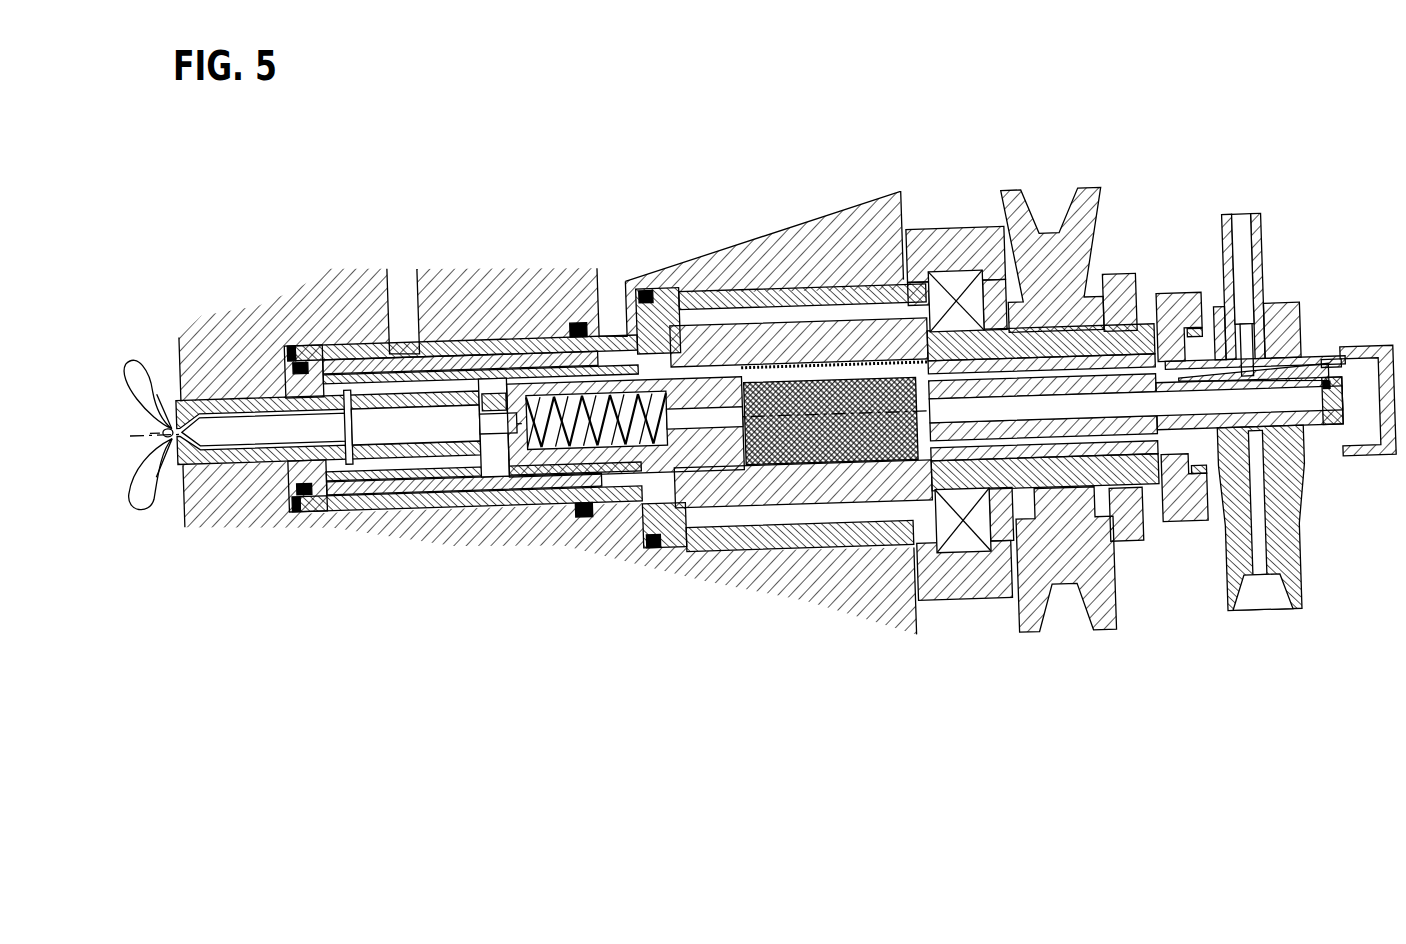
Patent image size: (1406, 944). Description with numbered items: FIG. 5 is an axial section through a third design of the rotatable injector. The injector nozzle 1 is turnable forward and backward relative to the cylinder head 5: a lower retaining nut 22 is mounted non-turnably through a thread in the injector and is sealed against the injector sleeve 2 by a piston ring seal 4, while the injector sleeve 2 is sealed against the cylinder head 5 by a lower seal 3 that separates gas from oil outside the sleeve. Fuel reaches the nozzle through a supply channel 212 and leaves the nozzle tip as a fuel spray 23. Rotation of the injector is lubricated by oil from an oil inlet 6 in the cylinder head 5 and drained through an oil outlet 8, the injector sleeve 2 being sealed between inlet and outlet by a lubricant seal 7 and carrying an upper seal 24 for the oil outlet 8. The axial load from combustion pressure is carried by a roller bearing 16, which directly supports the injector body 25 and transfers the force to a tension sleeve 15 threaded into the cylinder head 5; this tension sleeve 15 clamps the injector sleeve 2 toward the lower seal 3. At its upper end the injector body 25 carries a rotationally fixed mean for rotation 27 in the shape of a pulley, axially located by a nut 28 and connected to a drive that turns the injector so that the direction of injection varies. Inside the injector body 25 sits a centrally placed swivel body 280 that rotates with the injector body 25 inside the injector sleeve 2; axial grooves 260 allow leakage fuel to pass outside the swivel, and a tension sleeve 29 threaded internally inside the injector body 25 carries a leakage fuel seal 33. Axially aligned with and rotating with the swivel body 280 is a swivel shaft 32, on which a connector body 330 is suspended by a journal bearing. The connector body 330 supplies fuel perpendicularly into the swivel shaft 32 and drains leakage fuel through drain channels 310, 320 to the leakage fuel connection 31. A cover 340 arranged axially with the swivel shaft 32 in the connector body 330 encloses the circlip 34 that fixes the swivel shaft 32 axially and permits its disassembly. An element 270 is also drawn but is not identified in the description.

The injector nozzle 1 is at (172, 397).
The injector sleeve 2 is at (330, 338).
The lower seal 3 is at (290, 342).
The piston ring seal 4 is at (303, 367).
The cylinder head 5 is at (213, 382).
The oil inlet 6 is at (408, 287).
The lubricant seal 7 is at (575, 330).
The oil outlet 8 is at (618, 287).
The tension sleeve 15 is at (922, 240).
The roller bearing 16 is at (957, 280).
The lower retaining nut 22 is at (410, 530).
The fuel spray 23 is at (140, 493).
The upper seal 24 is at (650, 290).
The injector body 25 is at (685, 303).
The mean for rotation 27 is at (1082, 220).
The nut 28 is at (1125, 273).
The tension sleeve 29 is at (1187, 290).
The leakage fuel return line 31 is at (1250, 270).
The swivel shaft 32 is at (1313, 447).
The leakage fuel seal 33 is at (1197, 473).
The circlip 34 is at (1332, 437).
The supply channel 212 is at (510, 383).
The external axial grooves 260 is at (780, 543).
The rotor wall 270 is at (815, 325).
The swivel body 280 is at (717, 550).
The drain channel 310 is at (1300, 360).
The drain channel 320 is at (1212, 307).
The connector body 330 is at (1290, 307).
The cover 340 is at (1380, 347).